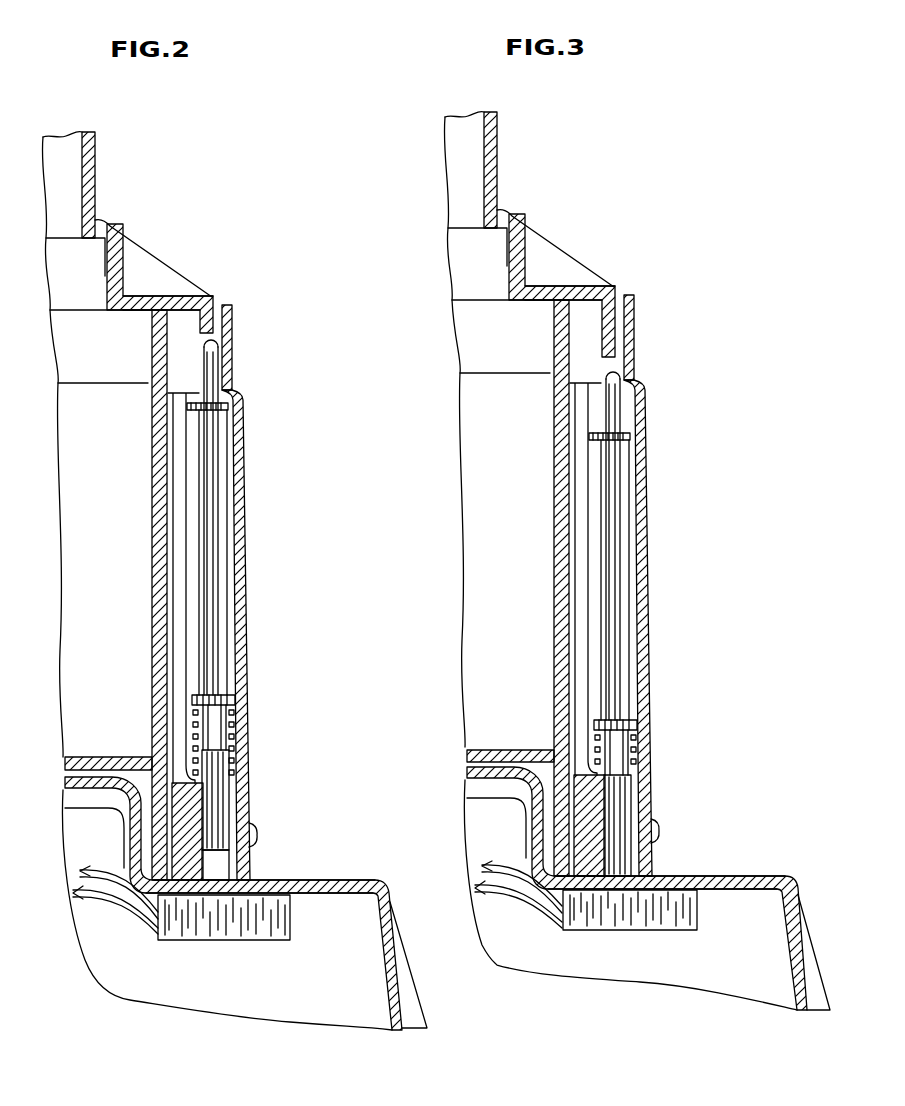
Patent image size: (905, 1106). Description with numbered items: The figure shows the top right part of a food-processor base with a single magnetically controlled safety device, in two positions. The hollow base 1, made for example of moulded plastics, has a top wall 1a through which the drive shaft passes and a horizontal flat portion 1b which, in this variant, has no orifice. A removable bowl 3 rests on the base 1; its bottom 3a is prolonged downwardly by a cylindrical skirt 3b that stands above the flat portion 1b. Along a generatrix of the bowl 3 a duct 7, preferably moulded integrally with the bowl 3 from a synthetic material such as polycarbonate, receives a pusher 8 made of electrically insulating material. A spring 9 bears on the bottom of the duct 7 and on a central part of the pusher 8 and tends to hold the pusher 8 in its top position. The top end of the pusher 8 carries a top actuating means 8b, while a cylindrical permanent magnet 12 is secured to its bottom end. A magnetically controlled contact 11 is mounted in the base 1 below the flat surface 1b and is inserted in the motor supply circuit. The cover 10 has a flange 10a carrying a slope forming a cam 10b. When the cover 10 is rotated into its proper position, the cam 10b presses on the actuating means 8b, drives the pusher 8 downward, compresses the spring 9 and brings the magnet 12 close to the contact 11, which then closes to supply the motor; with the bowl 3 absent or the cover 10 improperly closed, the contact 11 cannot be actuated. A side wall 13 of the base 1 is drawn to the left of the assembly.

In FIG. 2, the hollow base 1 is at (413, 968).
In FIG. 3, the hollow base 1 is at (637, 560).
In FIG. 2, the top wall of the base 1a is at (88, 783).
In FIG. 3, the top wall of the base 1a is at (637, 860).
In FIG. 2, the horizontal flat portion of the base 1b is at (340, 885).
In FIG. 3, the horizontal flat portion of the base 1b is at (666, 863).
In FIG. 2, the bowl 3 is at (150, 587).
In FIG. 3, the bowl 3 is at (623, 588).
In FIG. 2, the bottom of the bowl 3a is at (118, 760).
In FIG. 3, the bottom of the bowl 3a is at (510, 706).
In FIG. 2, the cylindrical skirt 3b is at (167, 808).
In FIG. 3, the cylindrical skirt 3b is at (542, 825).
In FIG. 2, the duct 7 is at (242, 597).
In FIG. 3, the duct 7 is at (659, 628).
In FIG. 2, the pusher 8 is at (217, 490).
In FIG. 3, the pusher 8 is at (646, 549).
In FIG. 2, the top actuating means 8b is at (207, 373).
In FIG. 3, the top actuating means 8b is at (644, 403).
In FIG. 2, the spring 9 is at (233, 740).
In FIG. 3, the spring 9 is at (639, 742).
In FIG. 2, the cover 10 is at (118, 258).
In FIG. 3, the cover 10 is at (556, 257).
In FIG. 2, the flange 10a is at (177, 300).
In FIG. 3, the flange 10a is at (586, 229).
In FIG. 2, the cam slope 10b is at (233, 330).
In FIG. 3, the cam slope 10b is at (657, 337).
In FIG. 2, the magnetically controlled contact 11 is at (218, 912).
In FIG. 3, the magnetically controlled contact 11 is at (630, 936).
In FIG. 2, the permanent magnet 12 is at (217, 812).
In FIG. 3, the permanent magnet 12 is at (653, 825).
In FIG. 2, the side wall 13 is at (95, 150).
In FIG. 3, the side wall 13 is at (519, 170).